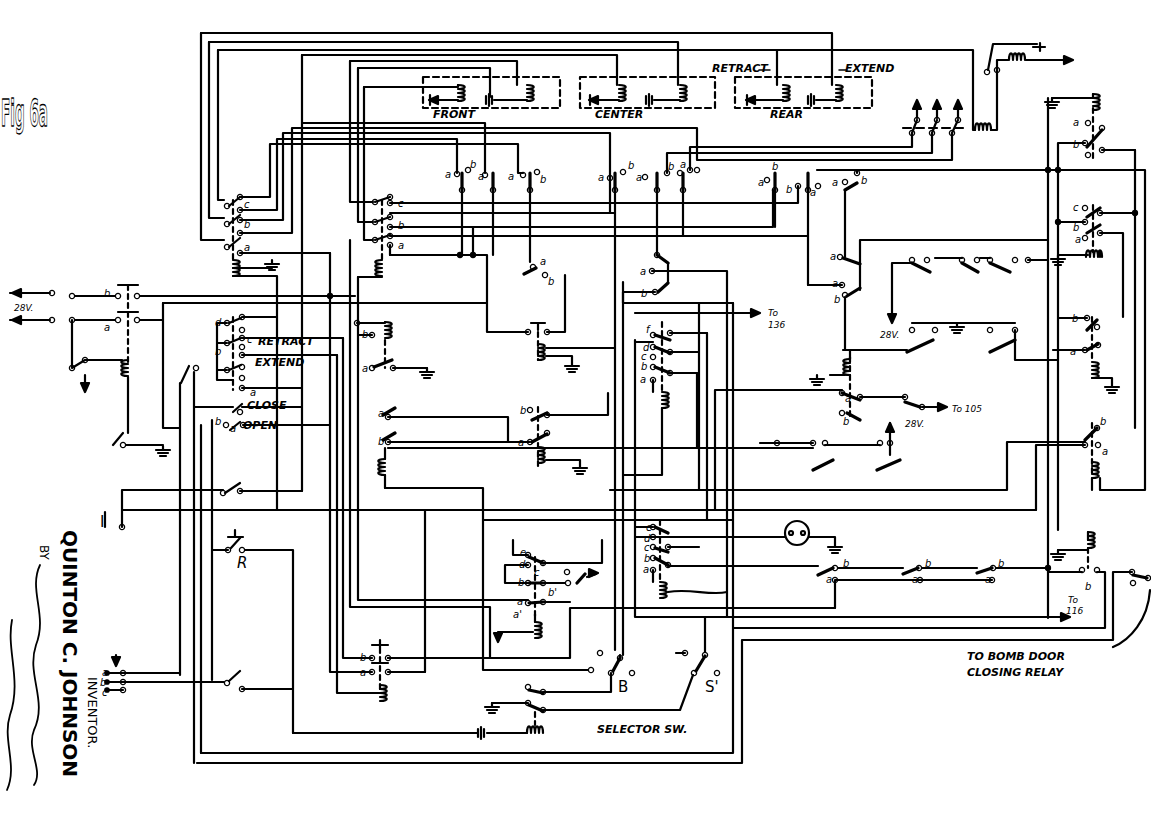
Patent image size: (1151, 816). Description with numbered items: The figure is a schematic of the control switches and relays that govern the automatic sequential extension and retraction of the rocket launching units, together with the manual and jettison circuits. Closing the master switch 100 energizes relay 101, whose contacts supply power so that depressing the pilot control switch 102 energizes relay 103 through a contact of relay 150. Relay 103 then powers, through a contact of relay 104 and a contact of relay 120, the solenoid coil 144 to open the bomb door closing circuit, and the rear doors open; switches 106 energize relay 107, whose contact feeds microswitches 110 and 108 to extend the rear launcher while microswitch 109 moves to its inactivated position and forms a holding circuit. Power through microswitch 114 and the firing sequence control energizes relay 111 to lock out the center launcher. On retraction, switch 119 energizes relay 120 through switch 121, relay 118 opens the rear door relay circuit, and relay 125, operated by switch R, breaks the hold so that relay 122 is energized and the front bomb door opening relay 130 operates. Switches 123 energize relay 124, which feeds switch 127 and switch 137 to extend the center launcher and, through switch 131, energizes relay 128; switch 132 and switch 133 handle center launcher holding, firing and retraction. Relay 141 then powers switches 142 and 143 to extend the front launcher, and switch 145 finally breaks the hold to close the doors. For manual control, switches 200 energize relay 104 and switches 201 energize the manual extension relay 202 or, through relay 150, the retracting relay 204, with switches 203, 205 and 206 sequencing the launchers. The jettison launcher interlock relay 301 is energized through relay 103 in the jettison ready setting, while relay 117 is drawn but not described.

The master switch 100 is at (113, 440).
The relay 101 is at (134, 378).
The pilot control switch 102 is at (130, 667).
The relay 103 is at (397, 700).
The relay 104 is at (545, 640).
The switches 106 is at (966, 286).
The relay 107 is at (1092, 271).
The microswitch 108 is at (855, 190).
The microswitch 109 is at (828, 568).
The microswitch 110 is at (866, 261).
The relay 111 is at (727, 592).
The microswitch 114 is at (855, 298).
The relay 117 is at (1120, 88).
The relay 118 is at (862, 382).
The switch 119 is at (808, 172).
The relay 120 is at (1080, 483).
The switch 121 is at (1004, 354).
The relay 122 is at (1078, 380).
The switches 123 is at (856, 461).
The relay 124 is at (524, 452).
The relay 125 is at (549, 733).
The switch 127 is at (670, 259).
The relay 128 is at (656, 414).
The front bomb door opening relay 130 is at (550, 591).
The switch 131 is at (668, 286).
The switch 132 is at (916, 566).
The switch 133 is at (618, 172).
The switch 137 is at (655, 185).
The relay 141 is at (513, 347).
The switch 142 is at (540, 267).
The switch 143 is at (540, 173).
The solenoid coil 144 is at (493, 173).
The switch 145 is at (990, 566).
The relay 150 is at (394, 339).
The switches 200 is at (226, 443).
The switches 201 is at (246, 356).
The manual extension relay 202 is at (222, 270).
The switch 203 is at (697, 196).
The retracting relay 204 is at (392, 273).
The switch 205 is at (778, 170).
The switch 206 is at (463, 172).
The jettison launcher interlock relay 301 is at (395, 474).